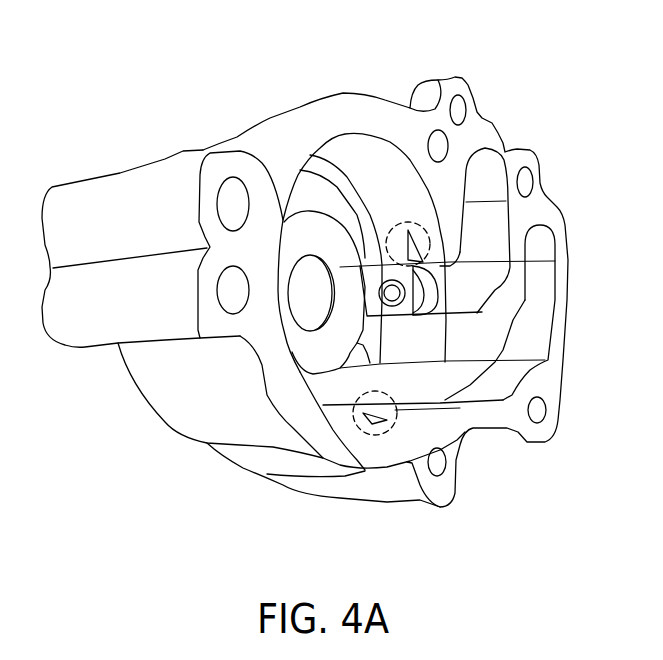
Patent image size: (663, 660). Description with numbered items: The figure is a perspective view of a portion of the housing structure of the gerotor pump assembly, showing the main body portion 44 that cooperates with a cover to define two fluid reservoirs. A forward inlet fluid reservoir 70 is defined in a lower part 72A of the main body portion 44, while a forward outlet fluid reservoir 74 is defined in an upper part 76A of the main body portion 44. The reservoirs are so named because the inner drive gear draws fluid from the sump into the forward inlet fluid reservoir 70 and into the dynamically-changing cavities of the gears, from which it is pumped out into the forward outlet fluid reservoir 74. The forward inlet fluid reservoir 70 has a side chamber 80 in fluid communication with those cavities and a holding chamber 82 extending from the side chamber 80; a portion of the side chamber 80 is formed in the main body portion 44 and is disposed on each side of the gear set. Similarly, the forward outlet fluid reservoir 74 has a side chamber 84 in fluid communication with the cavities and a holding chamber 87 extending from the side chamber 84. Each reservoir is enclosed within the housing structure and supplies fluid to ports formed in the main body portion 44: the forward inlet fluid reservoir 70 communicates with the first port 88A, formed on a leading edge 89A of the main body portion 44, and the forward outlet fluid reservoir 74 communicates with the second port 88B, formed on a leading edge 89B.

The main body portion 44 is at (224, 132).
The upper part of the main body portion 76A is at (383, 73).
The side chamber 84 is at (300, 193).
The side chamber 80 is at (327, 388).
The second port 88B is at (420, 255).
The holding chamber 87 is at (497, 208).
The leading edge 89B is at (440, 270).
The forward outlet fluid reservoir 74 is at (448, 296).
The holding chamber 82 is at (543, 333).
The forward inlet fluid reservoir 70 is at (457, 389).
The first port 88A is at (383, 417).
The leading edge 89A is at (400, 409).
The lower part of the main body portion 72A is at (362, 463).